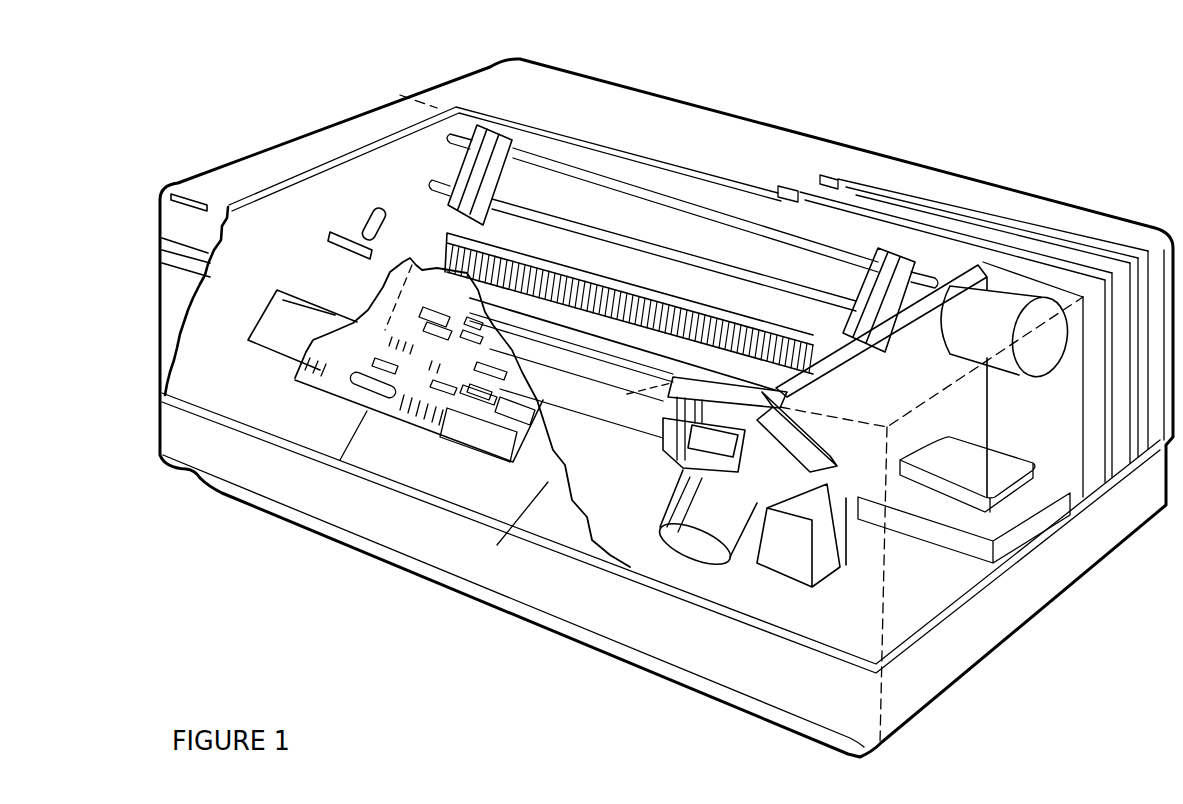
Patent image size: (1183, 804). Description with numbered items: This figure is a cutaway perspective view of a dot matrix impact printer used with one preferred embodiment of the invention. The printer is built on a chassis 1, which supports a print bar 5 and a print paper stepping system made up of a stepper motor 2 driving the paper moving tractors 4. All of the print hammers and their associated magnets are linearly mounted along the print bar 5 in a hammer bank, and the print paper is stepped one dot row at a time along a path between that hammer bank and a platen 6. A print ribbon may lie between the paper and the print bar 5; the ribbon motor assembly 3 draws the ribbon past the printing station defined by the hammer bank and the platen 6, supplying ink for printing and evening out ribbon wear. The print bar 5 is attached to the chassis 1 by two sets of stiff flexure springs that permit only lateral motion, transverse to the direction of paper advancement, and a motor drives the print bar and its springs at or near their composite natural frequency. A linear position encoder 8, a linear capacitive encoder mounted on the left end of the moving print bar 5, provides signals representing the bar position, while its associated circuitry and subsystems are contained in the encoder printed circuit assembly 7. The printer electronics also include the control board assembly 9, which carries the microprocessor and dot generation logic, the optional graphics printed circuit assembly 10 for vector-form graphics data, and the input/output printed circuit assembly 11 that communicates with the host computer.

The chassis 1 is at (245, 326).
The stepper motor 2 is at (1040, 284).
The ribbon motor assembly 3 is at (805, 518).
The paper moving tractors 4 is at (448, 160).
The print bar 5 is at (440, 226).
The platen 6 is at (347, 212).
The encoder printed circuit assembly 7 is at (453, 456).
The linear position encoder 8 is at (347, 278).
The control board assembly 9 is at (780, 180).
The graphics printed circuit assembly 10 is at (840, 175).
The input/output printed circuit assembly 11 is at (892, 175).